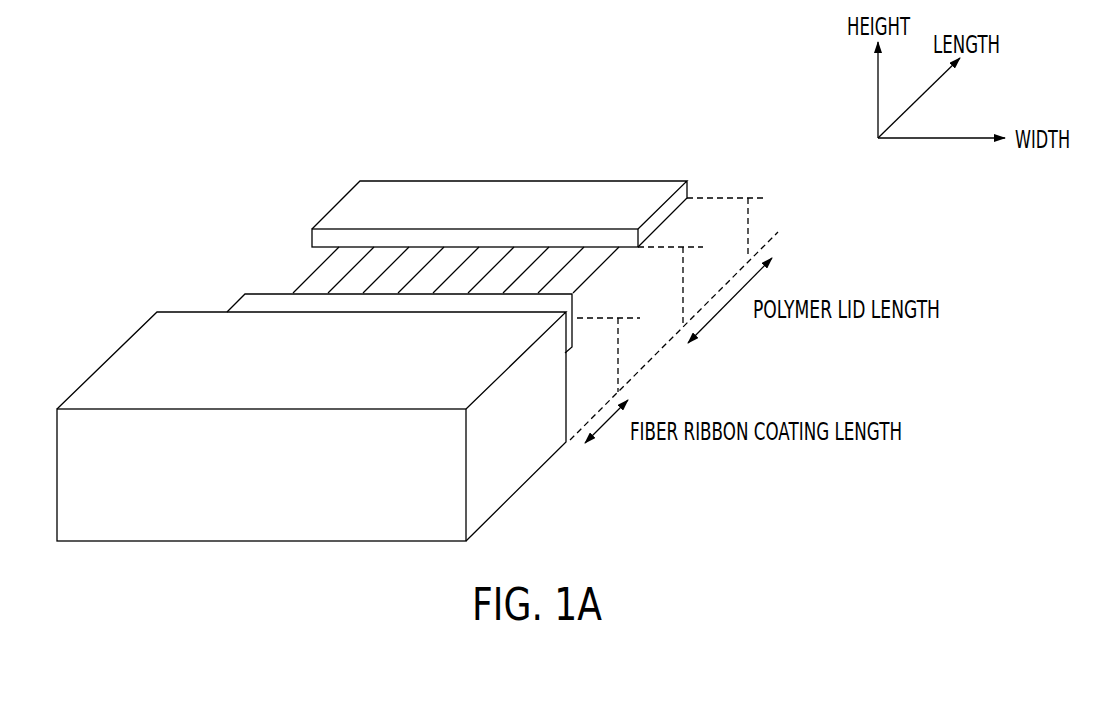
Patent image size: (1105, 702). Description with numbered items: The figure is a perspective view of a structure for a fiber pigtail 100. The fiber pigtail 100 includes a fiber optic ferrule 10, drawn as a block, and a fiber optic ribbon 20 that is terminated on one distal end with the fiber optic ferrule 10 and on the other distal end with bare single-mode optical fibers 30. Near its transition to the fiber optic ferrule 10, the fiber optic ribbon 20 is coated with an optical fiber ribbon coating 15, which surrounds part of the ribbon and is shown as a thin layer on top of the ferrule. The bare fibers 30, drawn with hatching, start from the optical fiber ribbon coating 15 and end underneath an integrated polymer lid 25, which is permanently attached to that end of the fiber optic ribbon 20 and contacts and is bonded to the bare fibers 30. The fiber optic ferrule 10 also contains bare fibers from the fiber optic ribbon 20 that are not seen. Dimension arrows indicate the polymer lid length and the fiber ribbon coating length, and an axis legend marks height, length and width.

The fiber pigtail 100 is at (174, 143).
The fiber optic ferrule 10 is at (70, 477).
The fiber optic ribbon 20 is at (360, 181).
The optical fiber ribbon coating 15 is at (250, 303).
The bare single-mode optical fibers 30 is at (327, 272).
The integrated polymer lid 25 is at (338, 214).